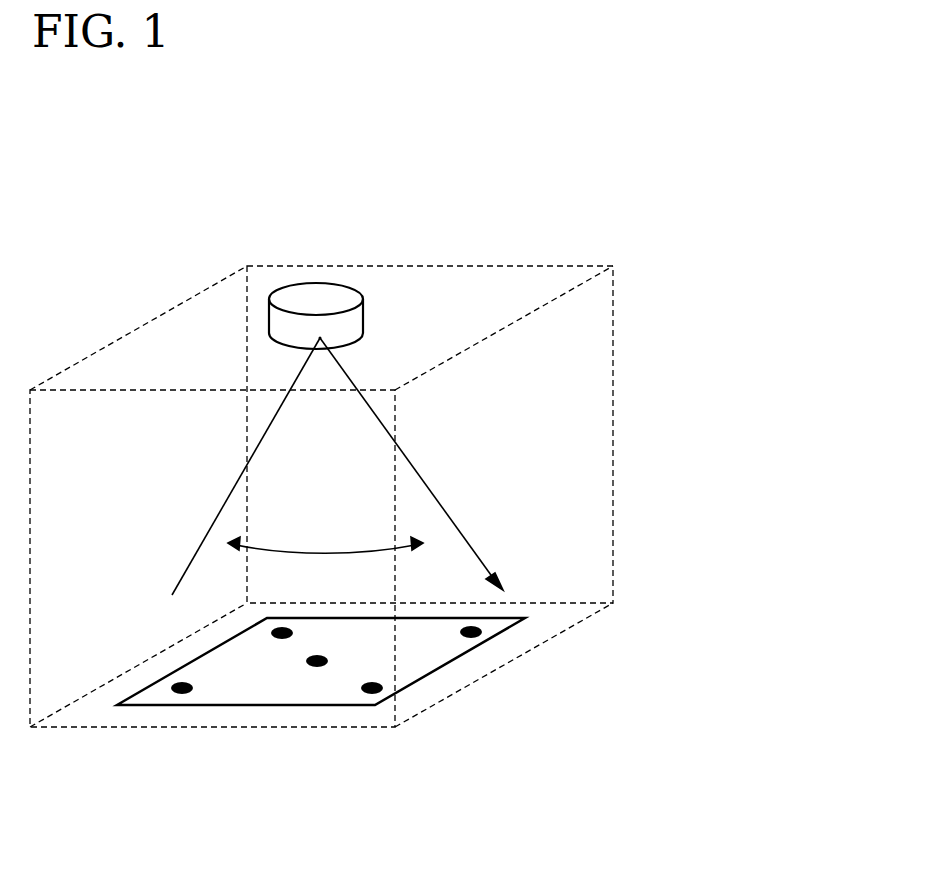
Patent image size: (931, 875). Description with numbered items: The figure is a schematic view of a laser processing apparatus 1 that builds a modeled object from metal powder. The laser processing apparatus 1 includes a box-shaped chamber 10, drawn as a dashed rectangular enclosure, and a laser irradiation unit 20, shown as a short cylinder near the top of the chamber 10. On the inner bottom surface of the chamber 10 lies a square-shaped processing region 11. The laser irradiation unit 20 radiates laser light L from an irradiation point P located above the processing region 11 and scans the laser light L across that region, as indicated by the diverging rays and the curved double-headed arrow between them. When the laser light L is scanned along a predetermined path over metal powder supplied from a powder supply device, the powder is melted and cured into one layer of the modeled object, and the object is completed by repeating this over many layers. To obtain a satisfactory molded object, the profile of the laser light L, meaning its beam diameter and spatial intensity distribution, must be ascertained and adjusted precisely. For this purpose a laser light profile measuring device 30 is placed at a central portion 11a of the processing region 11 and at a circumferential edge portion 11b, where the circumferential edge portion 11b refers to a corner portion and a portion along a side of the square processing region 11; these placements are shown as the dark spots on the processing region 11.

The laser processing apparatus 1 is at (96, 184).
The chamber 10 is at (612, 322).
The laser irradiation unit 20 is at (316, 297).
The irradiation point P is at (320, 340).
The laser light L is at (420, 478).
The processing region 11 is at (420, 655).
The central portion 11a is at (317, 660).
The circumferential edge portion 11b is at (182, 684).
The laser light profile measuring device 30 is at (299, 729).